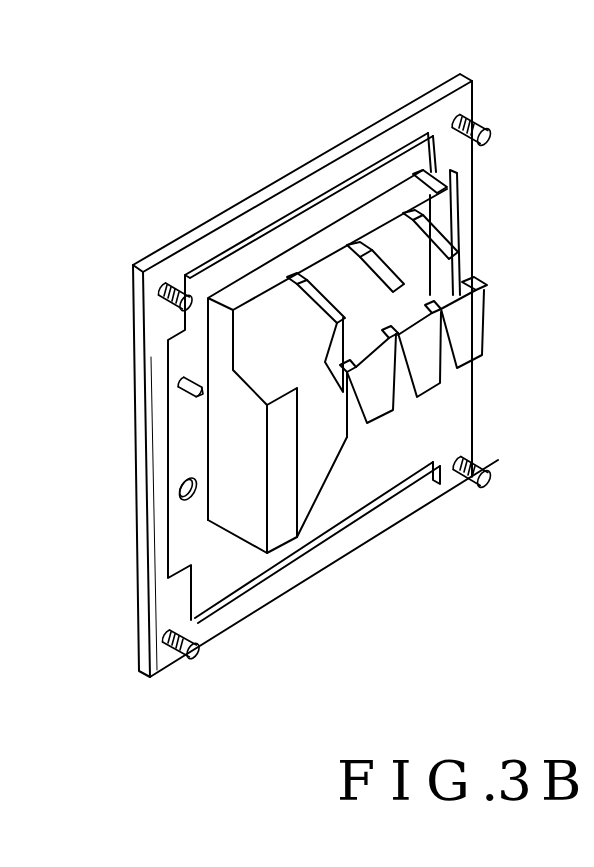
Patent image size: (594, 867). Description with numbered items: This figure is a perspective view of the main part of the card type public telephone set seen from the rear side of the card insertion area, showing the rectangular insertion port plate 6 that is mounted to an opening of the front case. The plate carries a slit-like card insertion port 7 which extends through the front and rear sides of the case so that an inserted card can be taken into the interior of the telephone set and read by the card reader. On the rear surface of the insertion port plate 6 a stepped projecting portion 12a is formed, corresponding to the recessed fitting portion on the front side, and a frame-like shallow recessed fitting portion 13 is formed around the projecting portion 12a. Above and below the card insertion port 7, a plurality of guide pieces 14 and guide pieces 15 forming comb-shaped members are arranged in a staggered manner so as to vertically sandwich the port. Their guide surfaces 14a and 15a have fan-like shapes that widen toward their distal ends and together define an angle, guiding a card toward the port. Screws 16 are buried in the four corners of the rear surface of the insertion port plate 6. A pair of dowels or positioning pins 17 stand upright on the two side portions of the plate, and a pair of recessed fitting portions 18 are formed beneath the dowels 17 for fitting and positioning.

The insertion port plate 6 is at (179, 211).
The card insertion port 7 is at (290, 396).
The stepped projecting portion 12a is at (238, 542).
The frame-like shallow recessed fitting portion 13 is at (248, 248).
The guide pieces 14 is at (300, 272).
The guide surfaces 14a is at (478, 262).
The guide pieces 15 is at (498, 305).
The guide surfaces 15a is at (330, 480).
The screws 16 is at (490, 120).
The dowels or positioning pins 17 is at (178, 388).
The recessed fitting portions 18 is at (178, 490).